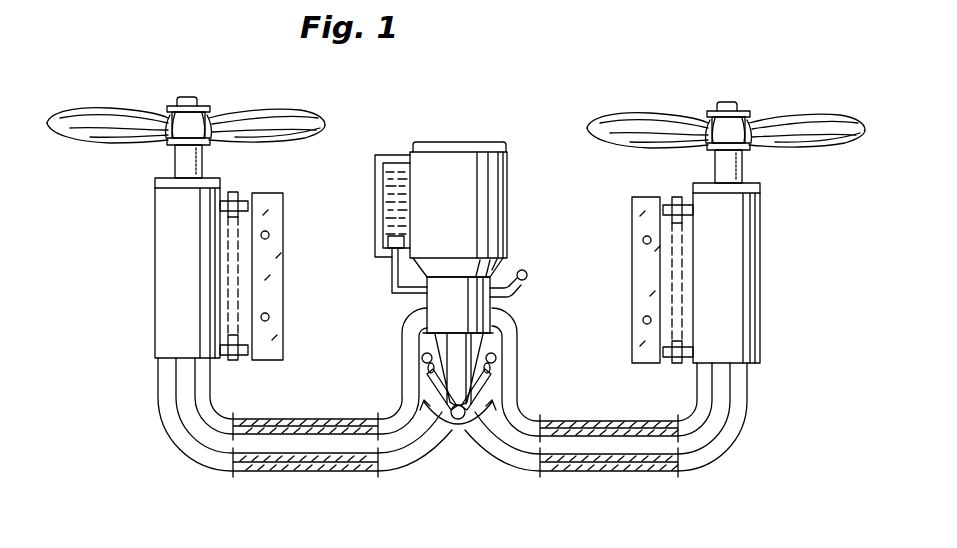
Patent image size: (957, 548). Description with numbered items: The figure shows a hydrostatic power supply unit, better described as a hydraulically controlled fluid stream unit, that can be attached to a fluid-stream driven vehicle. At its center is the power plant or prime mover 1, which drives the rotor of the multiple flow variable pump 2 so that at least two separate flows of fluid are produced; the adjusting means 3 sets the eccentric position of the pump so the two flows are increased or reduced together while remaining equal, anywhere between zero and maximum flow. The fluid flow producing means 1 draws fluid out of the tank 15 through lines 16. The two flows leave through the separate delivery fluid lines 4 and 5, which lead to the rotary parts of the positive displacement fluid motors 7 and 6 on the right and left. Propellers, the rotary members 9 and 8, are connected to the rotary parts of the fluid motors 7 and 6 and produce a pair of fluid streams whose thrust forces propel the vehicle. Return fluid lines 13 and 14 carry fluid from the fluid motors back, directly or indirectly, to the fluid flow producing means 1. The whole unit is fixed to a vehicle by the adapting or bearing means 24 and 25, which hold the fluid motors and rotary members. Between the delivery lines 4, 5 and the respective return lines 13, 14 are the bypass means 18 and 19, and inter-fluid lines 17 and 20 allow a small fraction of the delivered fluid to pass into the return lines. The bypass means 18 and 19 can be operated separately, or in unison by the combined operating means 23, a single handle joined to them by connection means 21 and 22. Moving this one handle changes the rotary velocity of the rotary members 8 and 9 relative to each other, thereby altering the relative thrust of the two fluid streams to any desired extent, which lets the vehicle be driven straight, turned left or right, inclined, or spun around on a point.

The power plant or prime mover 1 is at (428, 158).
The multiple flow variable pump 2 is at (448, 294).
The adjusting means 3 is at (524, 269).
The delivery fluid line 4 is at (649, 430).
The delivery fluid line 5 is at (257, 419).
The fluid motor 6 is at (166, 250).
The fluid motor 7 is at (745, 333).
The rotary member (propeller) 8 is at (100, 113).
The rotary member (propeller) 9 is at (641, 126).
The return fluid line 13 is at (665, 465).
The return fluid line 14 is at (259, 464).
The tank 15 is at (388, 206).
The line 16 is at (396, 284).
The inter-fluid line 17 is at (490, 366).
The bypass means 18 is at (494, 355).
The bypass means 19 is at (424, 355).
The inter-fluid line 20 is at (426, 366).
The connection means 21 is at (489, 377).
The connection means 22 is at (430, 376).
The combined operating means 23 is at (459, 421).
The bearing means (adapting means) 24 is at (652, 271).
The bearing means (adapting means) 25 is at (273, 268).